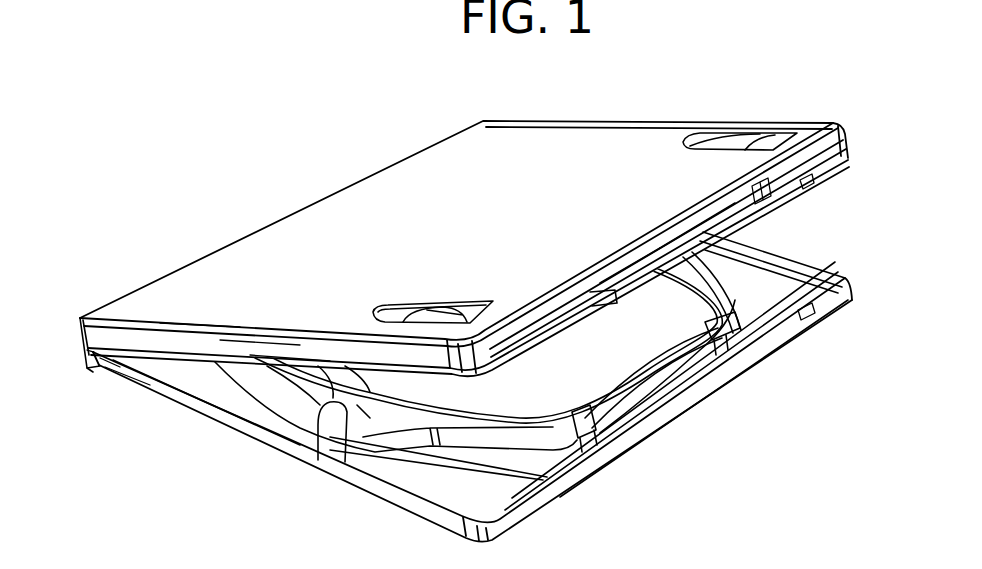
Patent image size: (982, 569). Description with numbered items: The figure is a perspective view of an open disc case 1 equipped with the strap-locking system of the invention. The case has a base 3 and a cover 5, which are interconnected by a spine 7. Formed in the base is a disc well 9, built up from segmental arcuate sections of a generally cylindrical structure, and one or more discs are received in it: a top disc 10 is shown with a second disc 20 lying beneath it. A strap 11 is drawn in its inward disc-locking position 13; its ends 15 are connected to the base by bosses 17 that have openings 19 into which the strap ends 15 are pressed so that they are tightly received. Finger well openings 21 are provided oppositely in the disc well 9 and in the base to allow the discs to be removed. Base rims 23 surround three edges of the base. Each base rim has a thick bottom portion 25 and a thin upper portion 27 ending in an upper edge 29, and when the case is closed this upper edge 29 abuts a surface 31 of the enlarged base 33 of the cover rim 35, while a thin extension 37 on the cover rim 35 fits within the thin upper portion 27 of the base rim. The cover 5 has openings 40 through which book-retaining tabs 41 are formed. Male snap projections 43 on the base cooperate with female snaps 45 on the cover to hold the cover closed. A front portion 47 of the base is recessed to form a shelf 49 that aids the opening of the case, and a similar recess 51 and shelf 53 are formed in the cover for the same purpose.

The disc case 1 is at (252, 157).
The base 3 is at (207, 420).
The cover 5 is at (240, 252).
The spine 7 is at (80, 326).
The disc well 9 is at (715, 290).
The disc 10 is at (592, 345).
The strap 11 is at (653, 373).
The inward disc-locking position 13 is at (618, 382).
The strap ends 15 is at (580, 410).
The bosses 17 is at (560, 417).
The openings 19 is at (700, 327).
The second disc 20 is at (353, 402).
The finger well openings 21 is at (333, 410).
The base rims 23 is at (157, 392).
The thick bottom portion 25 is at (753, 250).
The thin upper portion 27 is at (815, 262).
The upper edge 29 is at (198, 383).
The surface 31 is at (140, 352).
The enlarged base 33 is at (187, 338).
The cover rim 35 is at (243, 343).
The thin extension 37 is at (283, 360).
The openings 40 is at (397, 307).
The book-retaining tabs 41 is at (440, 308).
The male snap projections 43 is at (808, 308).
The female snaps 45 is at (812, 182).
The front portion 47 is at (723, 363).
The shelf 49 is at (650, 427).
The recess 51 is at (627, 265).
The shelf 53 is at (688, 218).